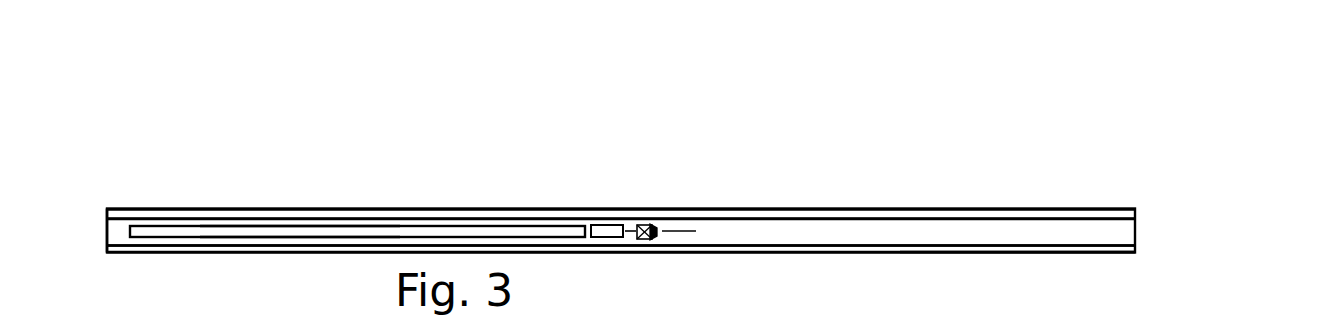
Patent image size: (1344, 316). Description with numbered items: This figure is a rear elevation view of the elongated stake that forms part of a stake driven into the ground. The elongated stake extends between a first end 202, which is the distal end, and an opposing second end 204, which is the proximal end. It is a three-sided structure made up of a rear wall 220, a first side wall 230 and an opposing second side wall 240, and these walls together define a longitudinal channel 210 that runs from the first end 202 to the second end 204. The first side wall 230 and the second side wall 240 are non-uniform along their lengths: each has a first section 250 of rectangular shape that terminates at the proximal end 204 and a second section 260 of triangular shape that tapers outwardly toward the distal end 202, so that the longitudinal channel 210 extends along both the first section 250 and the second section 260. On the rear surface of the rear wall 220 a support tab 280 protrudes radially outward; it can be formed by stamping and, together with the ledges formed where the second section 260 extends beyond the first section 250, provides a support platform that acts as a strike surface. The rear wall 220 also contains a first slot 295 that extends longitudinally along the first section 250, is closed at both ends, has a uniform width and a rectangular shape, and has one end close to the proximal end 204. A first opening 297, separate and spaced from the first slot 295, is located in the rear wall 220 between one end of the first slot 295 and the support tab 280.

The first end 202 is at (1135, 237).
The second end 204 is at (107, 227).
The longitudinal channel 210 is at (1002, 232).
The rear wall 220 is at (128, 228).
The first side wall 230 is at (395, 212).
The second side wall 240 is at (922, 253).
The first section 250 is at (318, 309).
The second section 260 is at (1017, 284).
The support tab 280 is at (647, 220).
The first slot 295 is at (277, 233).
The first opening 297 is at (602, 227).